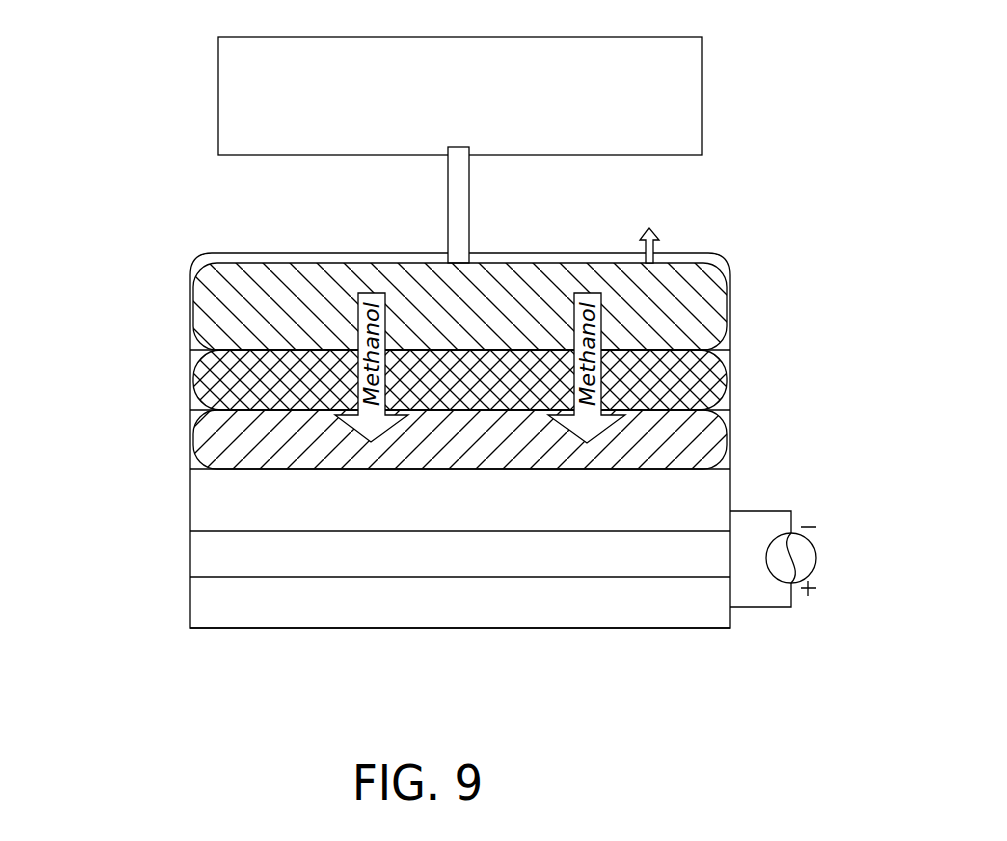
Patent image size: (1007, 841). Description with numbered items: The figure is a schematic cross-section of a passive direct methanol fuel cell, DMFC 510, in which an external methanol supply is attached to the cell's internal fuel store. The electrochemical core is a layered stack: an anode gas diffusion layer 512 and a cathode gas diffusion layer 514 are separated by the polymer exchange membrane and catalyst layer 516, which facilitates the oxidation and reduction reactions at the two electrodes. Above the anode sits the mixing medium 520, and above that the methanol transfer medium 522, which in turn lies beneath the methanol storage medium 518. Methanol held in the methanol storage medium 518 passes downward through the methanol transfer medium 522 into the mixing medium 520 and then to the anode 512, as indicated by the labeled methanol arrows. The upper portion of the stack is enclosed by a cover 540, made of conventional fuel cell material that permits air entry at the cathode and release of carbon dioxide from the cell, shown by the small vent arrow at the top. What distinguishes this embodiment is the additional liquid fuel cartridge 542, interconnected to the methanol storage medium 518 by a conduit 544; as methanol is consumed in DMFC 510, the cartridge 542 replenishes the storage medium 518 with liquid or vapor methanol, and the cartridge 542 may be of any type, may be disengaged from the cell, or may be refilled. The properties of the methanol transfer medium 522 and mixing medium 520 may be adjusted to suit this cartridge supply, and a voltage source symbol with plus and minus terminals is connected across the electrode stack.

The DMFC 510 is at (132, 168).
The anode gas diffusion layer 512 is at (205, 497).
The cathode gas diffusion layer 514 is at (205, 603).
The polymer exchange membrane and catalyst layer 516 is at (205, 553).
The methanol storage medium 518 is at (205, 308).
The mixing medium 520 is at (205, 439).
The methanol transfer medium 522 is at (205, 382).
The cover 540 is at (241, 252).
The liquid fuel cartridge 542 is at (230, 57).
The conduit 544 is at (470, 201).